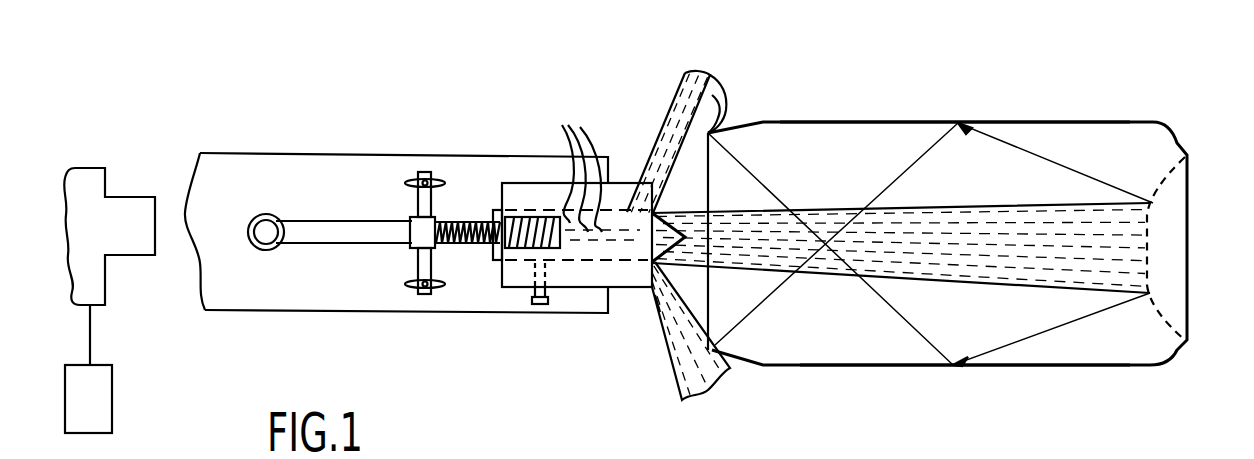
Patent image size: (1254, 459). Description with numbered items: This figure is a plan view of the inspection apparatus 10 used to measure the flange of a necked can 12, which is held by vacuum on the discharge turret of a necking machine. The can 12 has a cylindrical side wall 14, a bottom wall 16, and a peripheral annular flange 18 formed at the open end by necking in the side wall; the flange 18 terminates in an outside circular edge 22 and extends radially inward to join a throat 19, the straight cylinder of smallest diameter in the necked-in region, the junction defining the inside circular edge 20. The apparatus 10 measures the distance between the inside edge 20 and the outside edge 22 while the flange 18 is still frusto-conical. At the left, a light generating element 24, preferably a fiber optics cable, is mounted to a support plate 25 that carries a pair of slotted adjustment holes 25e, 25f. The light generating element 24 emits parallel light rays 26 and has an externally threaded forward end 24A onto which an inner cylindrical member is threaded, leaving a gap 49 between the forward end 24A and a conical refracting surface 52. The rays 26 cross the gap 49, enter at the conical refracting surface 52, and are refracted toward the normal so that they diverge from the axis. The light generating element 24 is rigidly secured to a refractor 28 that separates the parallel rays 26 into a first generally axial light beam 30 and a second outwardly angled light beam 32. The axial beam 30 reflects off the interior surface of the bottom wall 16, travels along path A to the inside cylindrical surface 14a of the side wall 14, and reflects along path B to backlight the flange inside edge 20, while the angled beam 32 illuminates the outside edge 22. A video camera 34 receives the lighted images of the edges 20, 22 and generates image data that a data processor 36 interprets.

The inspection apparatus 10 is at (505, 73).
The can 12 is at (1040, 123).
The cylindrical side wall 14 is at (875, 122).
The inside cylindrical surface 14a is at (1060, 364).
The bottom wall 16 is at (1167, 180).
The peripheral annular flange 18 is at (730, 104).
The throat 19 is at (733, 132).
The inside circular edge 20 is at (711, 137).
The outside circular edge 22 is at (716, 90).
The light generating element 24 is at (307, 219).
The externally threaded forward end 24A is at (462, 250).
The support plate 25 is at (365, 290).
The slotted adjustment hole 25e is at (413, 180).
The slotted adjustment hole 25f is at (410, 287).
The parallel light rays 26 is at (562, 125).
The refractor 28 is at (518, 269).
The first generally axial light beam 30 is at (944, 285).
The second outwardly angled light beam 32 is at (655, 337).
The video camera 34 is at (120, 197).
The data processor 36 is at (88, 369).
The gap 49 is at (610, 188).
The conical refracting surface 52 is at (635, 280).
The path A is at (1067, 325).
The path B is at (900, 177).